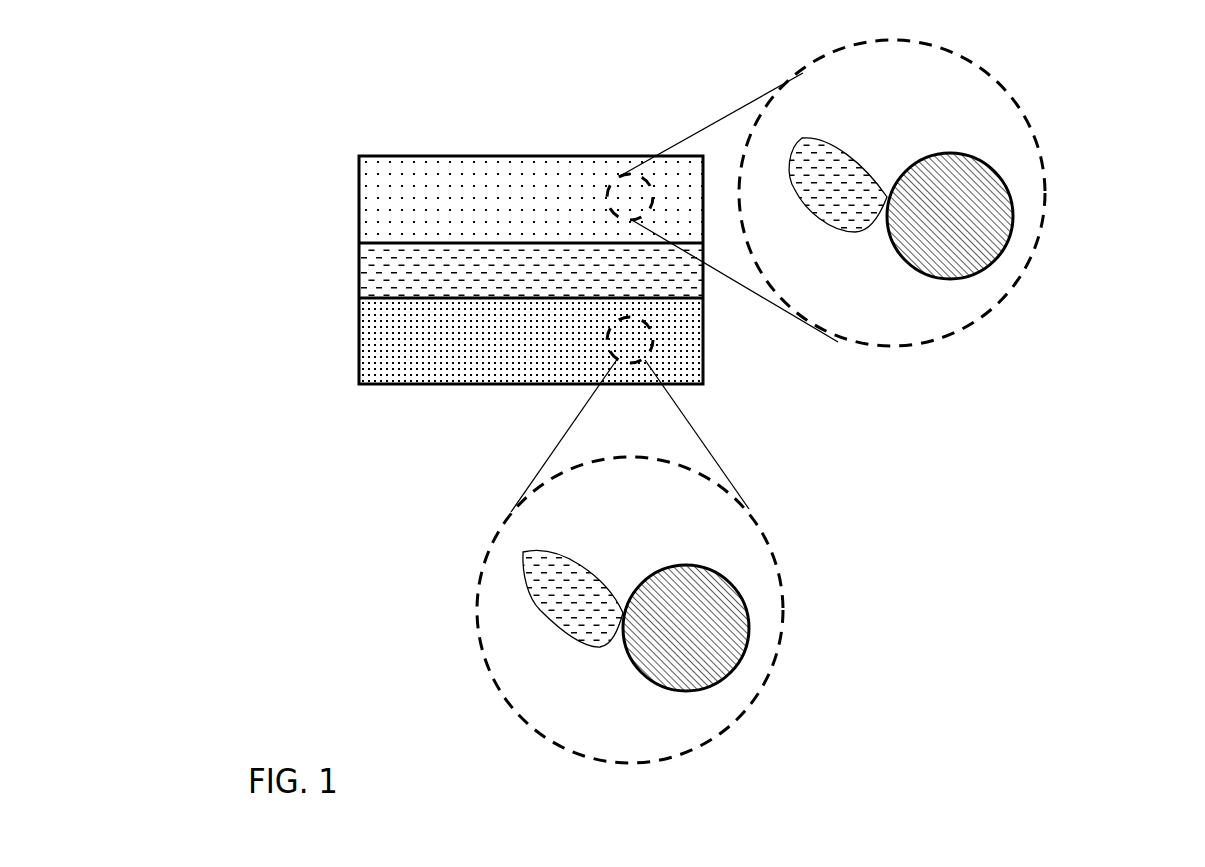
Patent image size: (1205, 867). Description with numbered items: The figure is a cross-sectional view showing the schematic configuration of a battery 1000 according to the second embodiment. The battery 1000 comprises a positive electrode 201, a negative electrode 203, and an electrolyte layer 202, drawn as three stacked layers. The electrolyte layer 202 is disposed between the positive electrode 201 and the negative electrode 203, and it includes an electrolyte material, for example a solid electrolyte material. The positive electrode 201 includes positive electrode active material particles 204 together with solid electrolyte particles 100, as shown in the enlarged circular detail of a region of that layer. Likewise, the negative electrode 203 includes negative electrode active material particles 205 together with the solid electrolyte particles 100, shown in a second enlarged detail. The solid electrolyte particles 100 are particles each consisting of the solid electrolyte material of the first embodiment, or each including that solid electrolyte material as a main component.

The battery 1000 is at (455, 223).
The positive electrode 201 is at (402, 182).
The electrolyte layer 202 is at (402, 265).
The negative electrode 203 is at (400, 340).
The positive electrode active material particles 204 is at (970, 217).
The negative electrode active material particles 205 is at (703, 623).
The solid electrolyte particles 100 is at (853, 205).